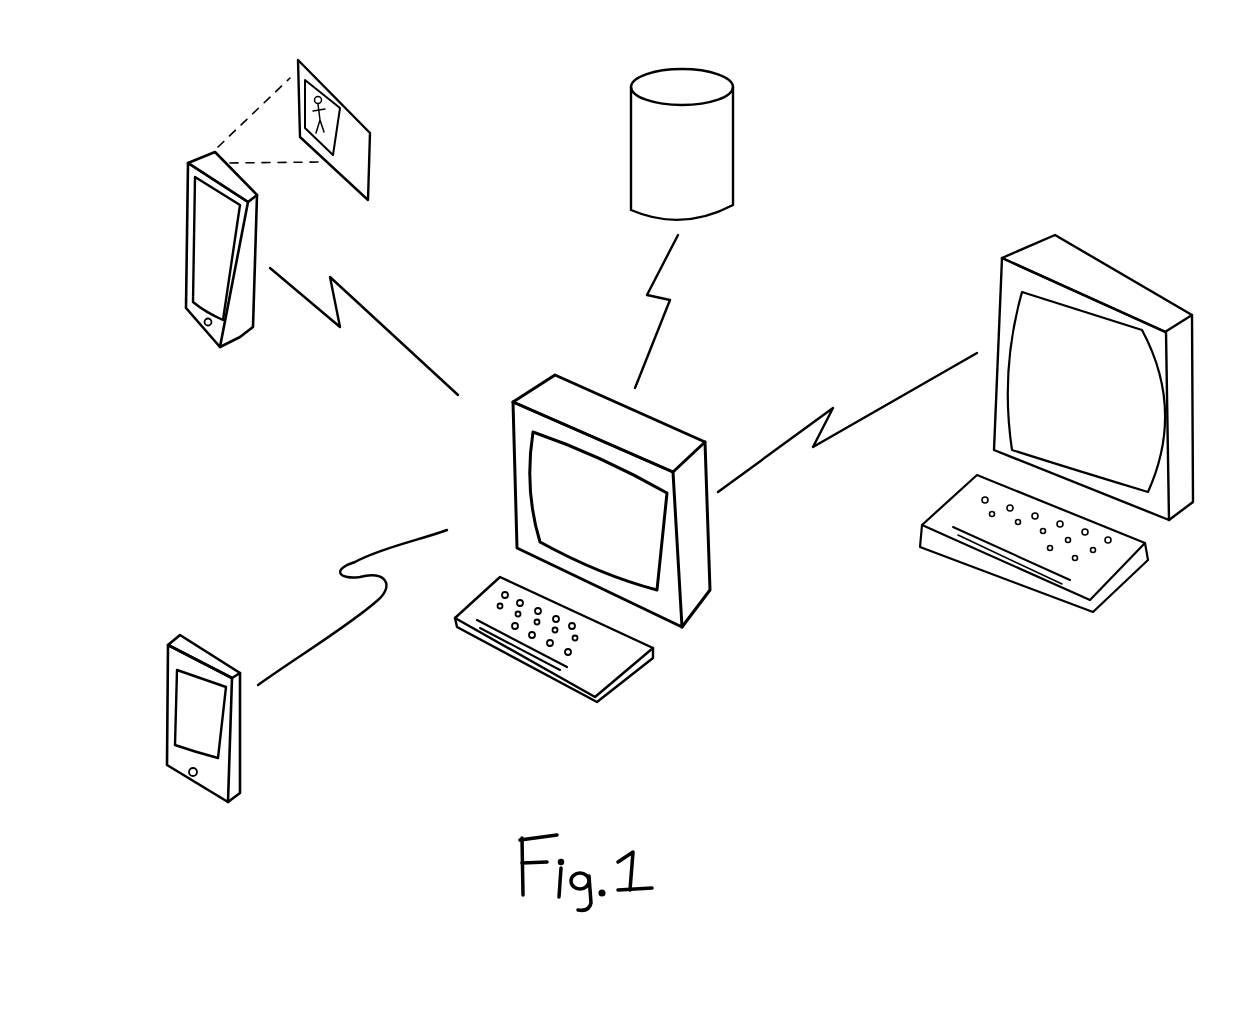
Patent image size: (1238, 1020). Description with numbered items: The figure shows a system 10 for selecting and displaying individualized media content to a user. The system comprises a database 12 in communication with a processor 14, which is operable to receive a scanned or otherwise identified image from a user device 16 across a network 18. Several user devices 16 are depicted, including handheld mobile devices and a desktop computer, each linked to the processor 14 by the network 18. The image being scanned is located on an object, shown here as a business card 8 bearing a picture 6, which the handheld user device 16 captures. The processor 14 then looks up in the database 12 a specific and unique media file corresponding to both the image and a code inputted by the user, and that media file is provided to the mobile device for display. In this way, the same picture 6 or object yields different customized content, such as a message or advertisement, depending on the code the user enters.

The picture 6 is at (317, 75).
The business card 8 is at (348, 107).
The system 10 is at (781, 282).
The database 12 is at (733, 130).
The processor 14 is at (705, 588).
The user device 16 is at (1098, 238).
The network 18 is at (413, 348).